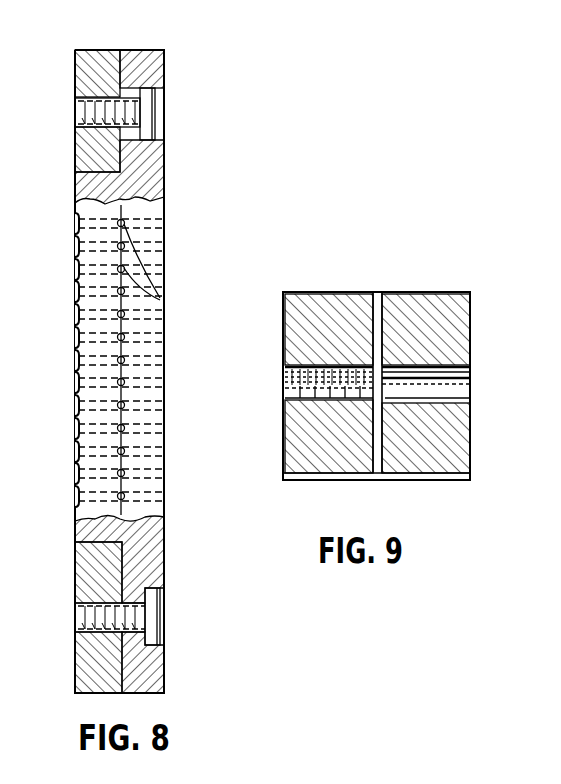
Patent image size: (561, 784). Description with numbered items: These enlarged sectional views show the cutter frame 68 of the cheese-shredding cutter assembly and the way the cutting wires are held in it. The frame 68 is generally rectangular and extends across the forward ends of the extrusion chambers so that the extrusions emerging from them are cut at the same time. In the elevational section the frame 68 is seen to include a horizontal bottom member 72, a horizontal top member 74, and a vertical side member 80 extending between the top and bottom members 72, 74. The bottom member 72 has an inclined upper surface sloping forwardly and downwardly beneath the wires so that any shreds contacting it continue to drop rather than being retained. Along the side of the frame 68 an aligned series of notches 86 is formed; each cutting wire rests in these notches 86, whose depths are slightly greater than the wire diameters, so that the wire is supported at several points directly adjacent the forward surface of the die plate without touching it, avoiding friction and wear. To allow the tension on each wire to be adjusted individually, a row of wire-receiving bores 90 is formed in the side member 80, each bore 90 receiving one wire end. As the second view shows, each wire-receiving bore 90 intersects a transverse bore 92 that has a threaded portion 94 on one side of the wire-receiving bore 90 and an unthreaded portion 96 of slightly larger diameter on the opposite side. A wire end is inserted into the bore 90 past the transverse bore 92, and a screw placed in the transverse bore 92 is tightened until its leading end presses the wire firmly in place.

In FIG. 8, the frame 68 is at (124, 48).
In FIG. 8, the horizontal bottom member 72 is at (75, 655).
In FIG. 8, the horizontal top member 74 is at (91, 50).
In FIG. 8, the vertical side member 80 is at (164, 170).
In FIG. 9, the vertical side member 80 is at (291, 292).
In FIG. 8, the notches 86 is at (75, 266).
In FIG. 8, the wire-receiving bore 90 is at (140, 216).
In FIG. 9, the wire-receiving bore 90 is at (378, 292).
In FIG. 8, the transverse bore 92 is at (176, 290).
In FIG. 9, the transverse bore 92 is at (410, 365).
In FIG. 9, the threaded portion 94 is at (316, 396).
In FIG. 9, the unthreaded portion 96 is at (414, 402).